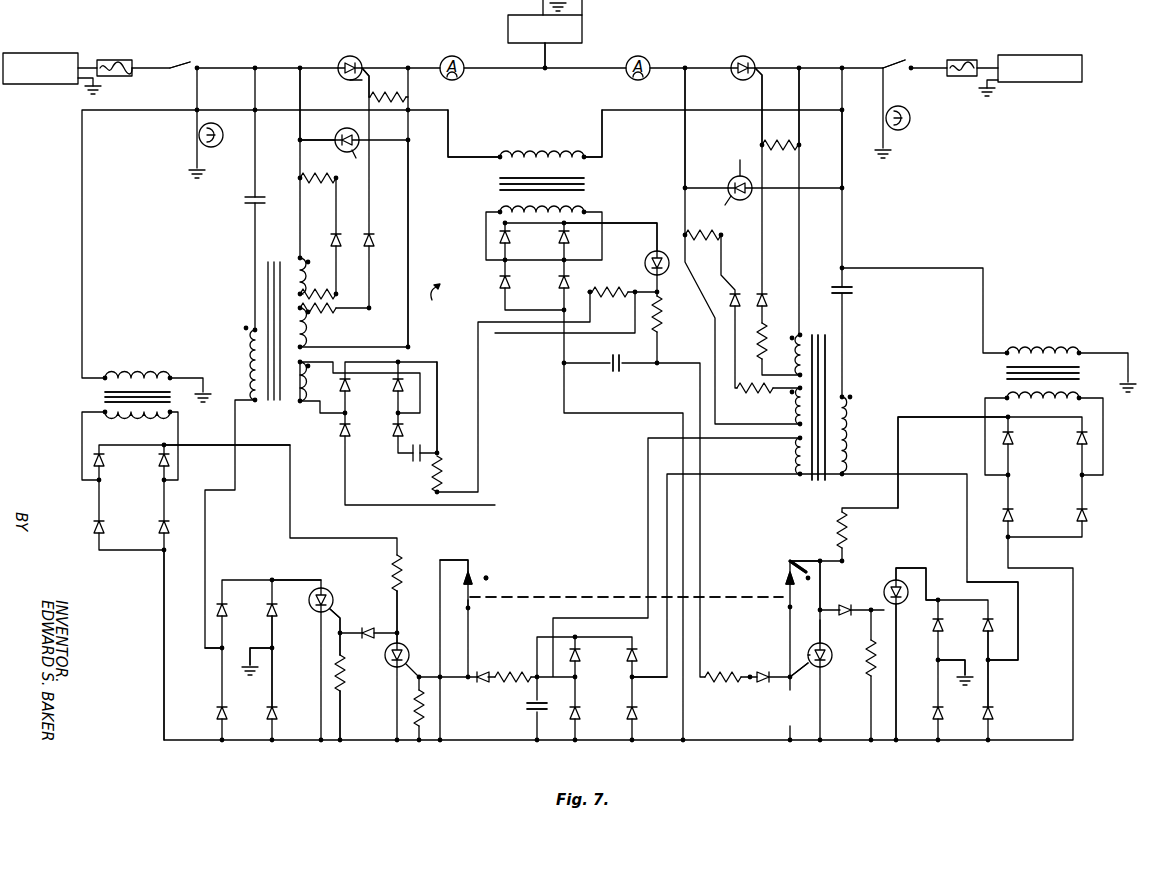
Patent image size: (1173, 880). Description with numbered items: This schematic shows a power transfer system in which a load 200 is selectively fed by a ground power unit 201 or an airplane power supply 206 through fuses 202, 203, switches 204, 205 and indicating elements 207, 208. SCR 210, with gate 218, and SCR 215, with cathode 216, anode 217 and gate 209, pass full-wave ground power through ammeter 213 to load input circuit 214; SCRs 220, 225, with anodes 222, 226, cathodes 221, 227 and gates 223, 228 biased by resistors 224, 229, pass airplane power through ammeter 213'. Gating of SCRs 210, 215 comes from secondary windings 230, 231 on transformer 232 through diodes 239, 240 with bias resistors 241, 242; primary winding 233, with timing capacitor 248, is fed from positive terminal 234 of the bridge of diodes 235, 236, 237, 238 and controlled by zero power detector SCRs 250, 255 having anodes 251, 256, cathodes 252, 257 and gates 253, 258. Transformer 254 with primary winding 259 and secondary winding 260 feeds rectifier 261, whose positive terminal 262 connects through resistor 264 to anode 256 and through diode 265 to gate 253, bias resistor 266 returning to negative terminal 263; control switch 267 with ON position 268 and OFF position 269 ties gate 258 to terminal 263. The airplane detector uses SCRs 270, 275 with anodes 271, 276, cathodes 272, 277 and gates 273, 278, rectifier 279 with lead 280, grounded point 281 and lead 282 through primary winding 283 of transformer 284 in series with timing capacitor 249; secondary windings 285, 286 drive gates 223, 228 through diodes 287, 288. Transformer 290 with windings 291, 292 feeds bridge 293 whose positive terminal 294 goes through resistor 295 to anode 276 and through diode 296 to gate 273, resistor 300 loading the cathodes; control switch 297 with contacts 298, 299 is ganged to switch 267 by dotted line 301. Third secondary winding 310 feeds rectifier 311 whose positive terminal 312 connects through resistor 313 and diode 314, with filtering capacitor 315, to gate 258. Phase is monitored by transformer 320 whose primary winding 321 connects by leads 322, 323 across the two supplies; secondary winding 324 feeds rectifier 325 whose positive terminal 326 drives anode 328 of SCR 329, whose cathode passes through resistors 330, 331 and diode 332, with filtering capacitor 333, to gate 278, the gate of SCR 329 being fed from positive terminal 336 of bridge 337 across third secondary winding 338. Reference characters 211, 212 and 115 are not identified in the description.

The load 200 is at (582, 20).
The ground power unit 201 is at (62, 53).
The fuse 202 is at (110, 58).
The fuse 203 is at (960, 60).
The switch 204 is at (182, 60).
The switch 205 is at (888, 60).
The airplane power supply 206 is at (1068, 50).
The indicating element 207 is at (220, 124).
The indicating element 208 is at (910, 124).
The current gate electrode 209 is at (360, 82).
The first controlled rectifier 210 is at (352, 56).
The conductor 211 is at (325, 66).
The conductor 212 is at (370, 66).
The ammeter 213 is at (460, 53).
The second ammeter 213' is at (654, 53).
The input circuit 214 is at (546, 55).
The second SCR 215 is at (341, 134).
The cathode 216 is at (304, 148).
The anode 217 is at (408, 152).
The current gate electrode 218 is at (352, 158).
The SCR 220 is at (744, 56).
The cathode 221 is at (778, 62).
The anode 222 is at (714, 68).
The control gate electrode 223 is at (754, 86).
The bias resistor 224 is at (784, 136).
The SCR 225 is at (742, 162).
The anode 226 is at (820, 164).
The cathode 227 is at (720, 182).
The control gate electrode 228 is at (725, 205).
The bias resistor 229 is at (714, 240).
The secondary transformer winding 230 is at (298, 258).
The secondary transformer winding 231 is at (306, 332).
The transformer 232 is at (290, 400).
The primary winding 233 is at (246, 346).
The positive terminal 234 is at (226, 648).
The diode 235 is at (226, 608).
The diode 236 is at (226, 706).
The diode 237 is at (276, 608).
The diode 238 is at (276, 710).
The diode 239 is at (340, 246).
The diode 240 is at (374, 246).
The bias resistor 241 is at (324, 184).
The bias resistor 242 is at (412, 90).
The timing capacitor 248 is at (242, 208).
The second timing capacitor 249 is at (852, 288).
The SCR 250 is at (332, 590).
The anode 251 is at (290, 576).
The cathode 252 is at (306, 619).
The gate electrode 253 is at (344, 608).
The second transformer 254 is at (104, 398).
The SCR 255 is at (402, 654).
The anode 256 is at (390, 642).
The cathode 257 is at (388, 680).
The gate electrode 258 is at (410, 658).
The primary winding 259 is at (142, 372).
The secondary winding 260 is at (144, 418).
The full-wave rectifier 261 is at (90, 501).
The positive terminal 262 is at (210, 444).
The negative terminal 263 is at (162, 579).
The resistor 264 is at (372, 570).
The diode 265 is at (370, 626).
The bias resistor 266 is at (344, 702).
The ground power unit control switch 267 is at (478, 610).
The ON position 268 is at (472, 568).
The OFF position 269 is at (492, 579).
The SCR 270 is at (892, 579).
The anode 271 is at (916, 568).
The cathode 272 is at (892, 636).
The control gate 273 is at (872, 608).
The SCR 275 is at (808, 654).
The anode 276 is at (818, 624).
The cathode 277 is at (824, 676).
The control gate 278 is at (790, 665).
The full-wave rectifier 279 is at (998, 682).
The lead 280 is at (988, 600).
The bridge rectifier circuit intermediate point 281 is at (960, 660).
The lead 282 is at (1018, 616).
The primary winding 283 is at (854, 416).
The third transformer 284 is at (832, 351).
The secondary winding 285 is at (792, 338).
The secondary winding 286 is at (790, 408).
The diode 287 is at (768, 294).
The diode 288 is at (728, 292).
The fourth transformer 290 is at (1080, 378).
The primary winding 291 is at (1036, 348).
The secondary winding 292 is at (1034, 400).
The bridge rectifier circuit 293 is at (1110, 490).
The positive terminal 294 is at (940, 416).
The resistor 295 is at (846, 522).
The diode 296 is at (828, 600).
The control switch 297 is at (786, 576).
The contact 298 is at (794, 566).
The contact 299 is at (808, 561).
The resistor 300 is at (870, 650).
The dotted line 301 is at (614, 594).
The third secondary winding 310 is at (794, 457).
The full-wave rectifier circuit 311 is at (634, 690).
The positive terminal 312 is at (594, 638).
The resistor 313 is at (522, 676).
The diode 314 is at (484, 683).
The filtering capacitor 315 is at (530, 714).
The transformer 320 is at (584, 184).
The primary winding 321 is at (550, 154).
The lead 322 is at (610, 110).
The lead 323 is at (456, 112).
The secondary winding 324 is at (538, 242).
The full-wave rectifier 325 is at (556, 272).
The positive terminal 326 is at (634, 222).
The anode 328 is at (646, 238).
The SCR 329 is at (670, 287).
The resistor 330 is at (660, 328).
The resistor 331 is at (718, 682).
The diode 332 is at (758, 698).
The filtering capacitor 333 is at (614, 355).
The positive terminal 336 is at (424, 360).
The full-wave bridge rectifier 337 is at (384, 409).
The third secondary winding 338 is at (319, 381).
The circuit 115 is at (448, 303).